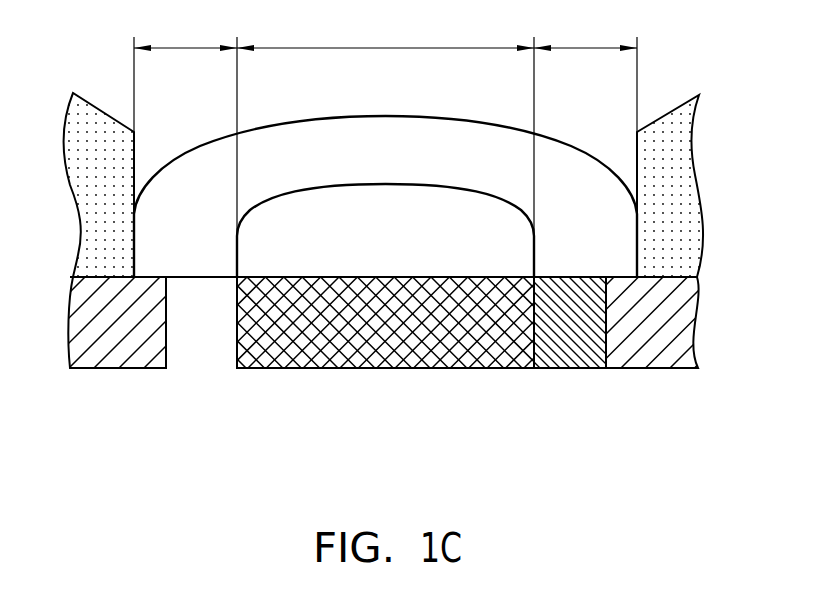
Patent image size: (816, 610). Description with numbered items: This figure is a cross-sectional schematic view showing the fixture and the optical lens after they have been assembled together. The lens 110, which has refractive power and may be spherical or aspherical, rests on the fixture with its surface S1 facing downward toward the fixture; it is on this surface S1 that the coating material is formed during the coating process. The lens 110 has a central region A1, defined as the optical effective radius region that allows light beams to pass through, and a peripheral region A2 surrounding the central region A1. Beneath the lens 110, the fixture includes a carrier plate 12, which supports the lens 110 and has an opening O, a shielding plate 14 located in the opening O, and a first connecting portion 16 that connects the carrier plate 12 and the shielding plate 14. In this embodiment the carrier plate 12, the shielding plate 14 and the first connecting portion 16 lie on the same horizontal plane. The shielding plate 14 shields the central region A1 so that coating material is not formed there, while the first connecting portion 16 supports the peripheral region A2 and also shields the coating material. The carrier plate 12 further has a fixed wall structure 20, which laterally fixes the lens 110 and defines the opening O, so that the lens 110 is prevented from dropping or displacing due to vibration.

The carrier plate 12 is at (119, 368).
The shielding plate 14 is at (407, 368).
The first connecting portion 16 is at (565, 368).
The fixed wall structure 20 is at (82, 195).
The lens 110 is at (397, 118).
The opening O is at (185, 337).
The surface S1 is at (217, 282).
The central region A1 is at (385, 147).
The peripheral region A2 is at (385, 147).